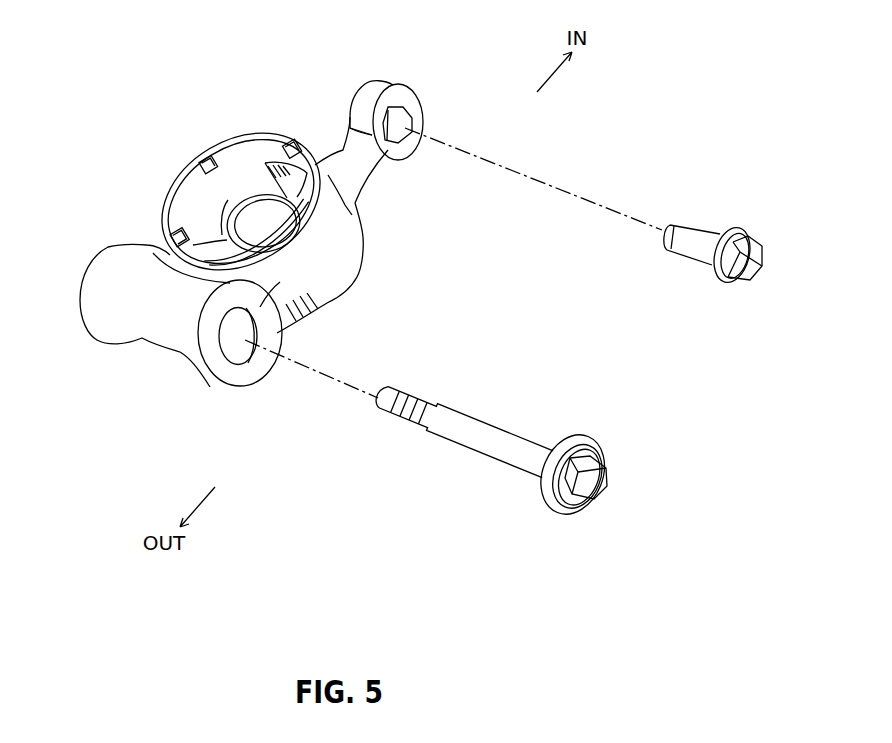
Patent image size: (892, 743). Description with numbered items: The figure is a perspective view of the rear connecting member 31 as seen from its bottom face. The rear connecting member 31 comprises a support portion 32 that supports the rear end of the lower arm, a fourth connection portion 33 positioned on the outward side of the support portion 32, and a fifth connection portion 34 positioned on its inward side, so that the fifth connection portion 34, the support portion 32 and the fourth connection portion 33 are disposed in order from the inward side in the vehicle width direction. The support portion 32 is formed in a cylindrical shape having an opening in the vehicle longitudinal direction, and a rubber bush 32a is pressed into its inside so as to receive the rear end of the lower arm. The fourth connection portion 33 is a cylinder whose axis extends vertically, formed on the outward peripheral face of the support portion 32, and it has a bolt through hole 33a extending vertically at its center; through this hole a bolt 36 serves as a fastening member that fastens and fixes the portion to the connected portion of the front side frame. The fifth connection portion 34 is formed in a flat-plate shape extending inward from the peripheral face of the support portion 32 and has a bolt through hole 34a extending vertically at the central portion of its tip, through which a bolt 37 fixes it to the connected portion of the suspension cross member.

The rear connecting member 31 is at (100, 121).
The support portion 32 is at (330, 285).
The rubber bush 32a is at (207, 195).
The fourth connection portion 33 is at (105, 328).
The bolt through hole 33a is at (218, 362).
The fifth connection portion 34 is at (392, 93).
The bolt through hole 34a is at (397, 125).
The bolt 36 is at (510, 457).
The bolt 37 is at (702, 252).